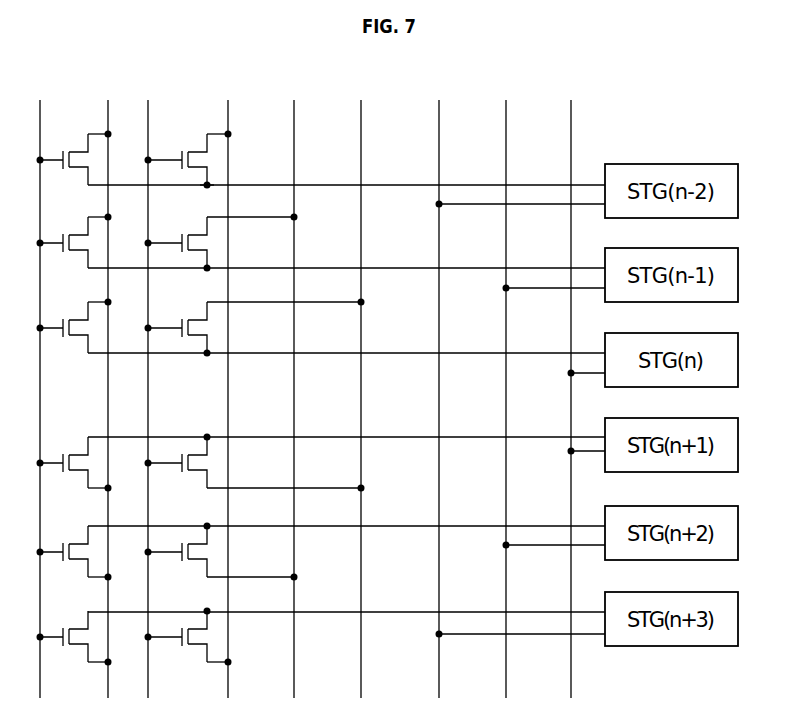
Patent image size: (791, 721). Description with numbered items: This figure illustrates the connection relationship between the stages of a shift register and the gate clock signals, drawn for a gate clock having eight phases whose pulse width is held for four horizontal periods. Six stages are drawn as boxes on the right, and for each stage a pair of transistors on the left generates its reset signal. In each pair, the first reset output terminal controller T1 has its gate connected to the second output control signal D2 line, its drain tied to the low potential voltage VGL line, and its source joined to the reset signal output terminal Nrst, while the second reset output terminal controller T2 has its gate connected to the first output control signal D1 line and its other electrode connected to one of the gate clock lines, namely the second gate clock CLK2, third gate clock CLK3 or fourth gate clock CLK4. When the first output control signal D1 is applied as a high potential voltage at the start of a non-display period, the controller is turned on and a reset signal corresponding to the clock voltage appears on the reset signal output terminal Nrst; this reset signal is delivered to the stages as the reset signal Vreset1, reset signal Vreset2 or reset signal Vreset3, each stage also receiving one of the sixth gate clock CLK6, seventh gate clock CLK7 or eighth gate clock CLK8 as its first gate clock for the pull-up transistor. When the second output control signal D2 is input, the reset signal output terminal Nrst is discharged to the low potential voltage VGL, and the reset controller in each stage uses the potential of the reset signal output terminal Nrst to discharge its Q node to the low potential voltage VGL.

The first reset output terminal controller T1 is at (82, 135).
The second reset output terminal controller T2 is at (193, 135).
The reset signal output terminal Nrst is at (202, 190).
The first output control signal D1 is at (151, 385).
The second output control signal D2 is at (40, 385).
The low potential voltage VGL is at (108, 385).
The second gate clock CLK2 is at (227, 385).
The third gate clock CLK3 is at (294, 385).
The fourth gate clock CLK4 is at (360, 385).
The sixth gate clock CLK6 is at (439, 385).
The seventh gate clock CLK7 is at (506, 385).
The eighth gate clock CLK8 is at (571, 385).
The reset signal Vreset1 is at (346, 384).
The reset signal Vreset2 is at (346, 383).
The reset signal Vreset3 is at (346, 381).